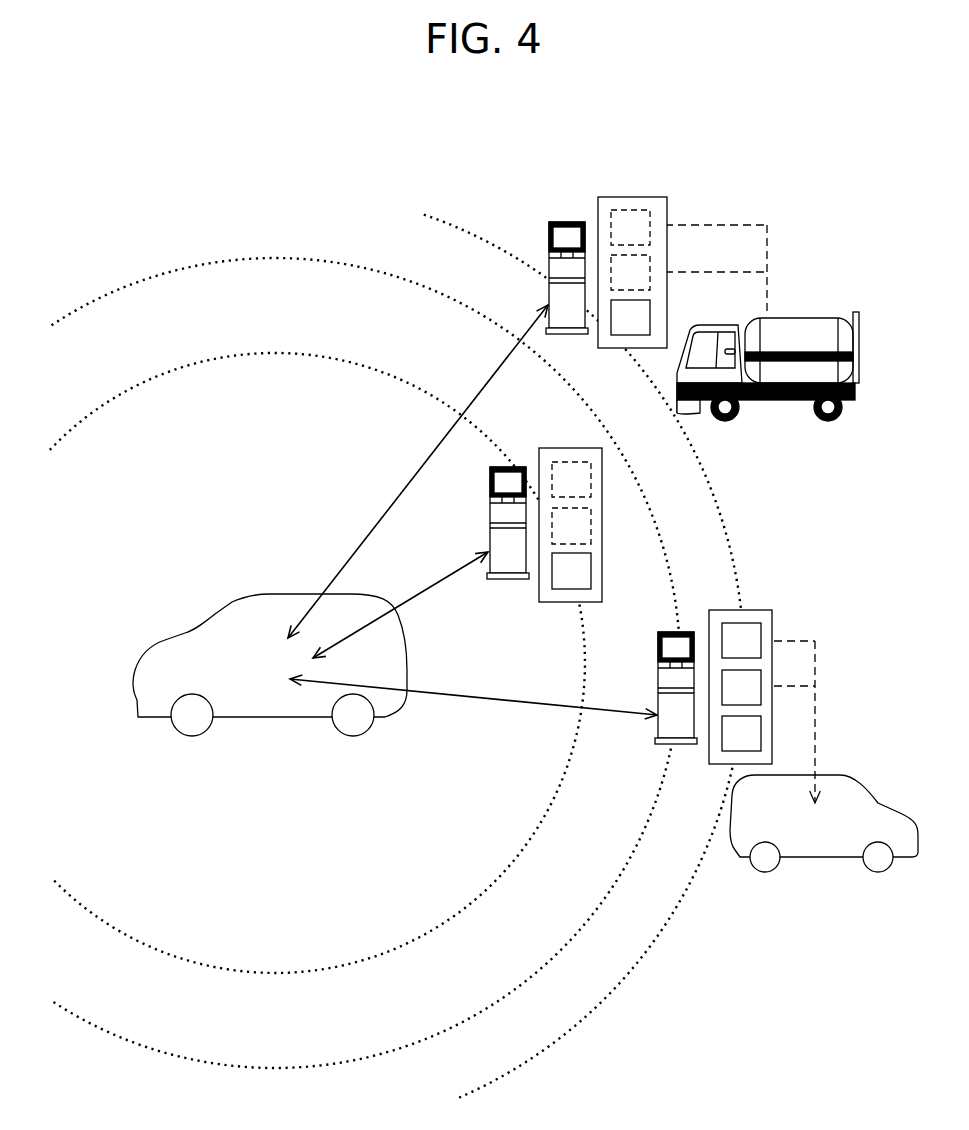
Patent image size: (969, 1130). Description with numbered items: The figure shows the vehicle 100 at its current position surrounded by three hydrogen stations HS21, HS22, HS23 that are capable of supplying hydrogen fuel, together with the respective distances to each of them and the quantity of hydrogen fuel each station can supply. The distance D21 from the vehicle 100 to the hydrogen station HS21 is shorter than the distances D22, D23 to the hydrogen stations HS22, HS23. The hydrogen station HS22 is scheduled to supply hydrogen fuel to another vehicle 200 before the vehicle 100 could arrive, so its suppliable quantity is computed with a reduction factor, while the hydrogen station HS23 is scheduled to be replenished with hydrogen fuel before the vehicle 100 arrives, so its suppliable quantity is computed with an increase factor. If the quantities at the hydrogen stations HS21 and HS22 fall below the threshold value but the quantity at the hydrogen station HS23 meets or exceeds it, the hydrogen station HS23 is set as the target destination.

The vehicle 100 is at (287, 671).
The another vehicle 200 is at (835, 835).
The hydrogen station HS21 is at (507, 567).
The hydrogen station HS22 is at (663, 727).
The hydrogen station HS23 is at (562, 323).
The distance D21 is at (400, 605).
The distance D22 is at (473, 705).
The distance D23 is at (418, 471).